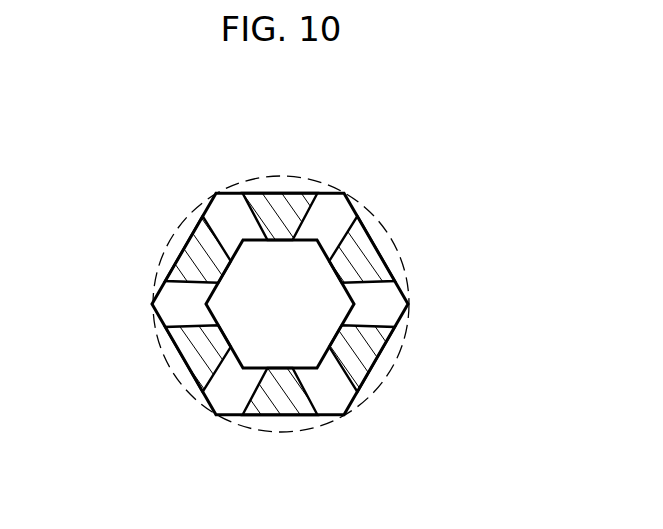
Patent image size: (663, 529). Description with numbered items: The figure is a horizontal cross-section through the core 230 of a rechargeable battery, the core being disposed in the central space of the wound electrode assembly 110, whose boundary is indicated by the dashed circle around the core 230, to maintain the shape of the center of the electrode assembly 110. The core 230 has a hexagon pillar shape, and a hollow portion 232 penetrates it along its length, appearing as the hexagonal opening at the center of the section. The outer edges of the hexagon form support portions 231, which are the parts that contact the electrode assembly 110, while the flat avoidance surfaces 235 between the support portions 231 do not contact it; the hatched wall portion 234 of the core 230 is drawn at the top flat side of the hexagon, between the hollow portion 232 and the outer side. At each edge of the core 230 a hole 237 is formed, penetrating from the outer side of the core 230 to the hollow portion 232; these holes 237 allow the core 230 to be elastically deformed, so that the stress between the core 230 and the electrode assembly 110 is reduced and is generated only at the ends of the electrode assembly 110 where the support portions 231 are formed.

The electrode assembly 110 is at (395, 243).
The core 230 is at (377, 182).
The support portion 231 is at (217, 193).
The hollow portion 232 is at (322, 313).
The upper rib portion 234 is at (277, 188).
The avoidance surface 235 is at (183, 360).
The hole 237 is at (347, 410).